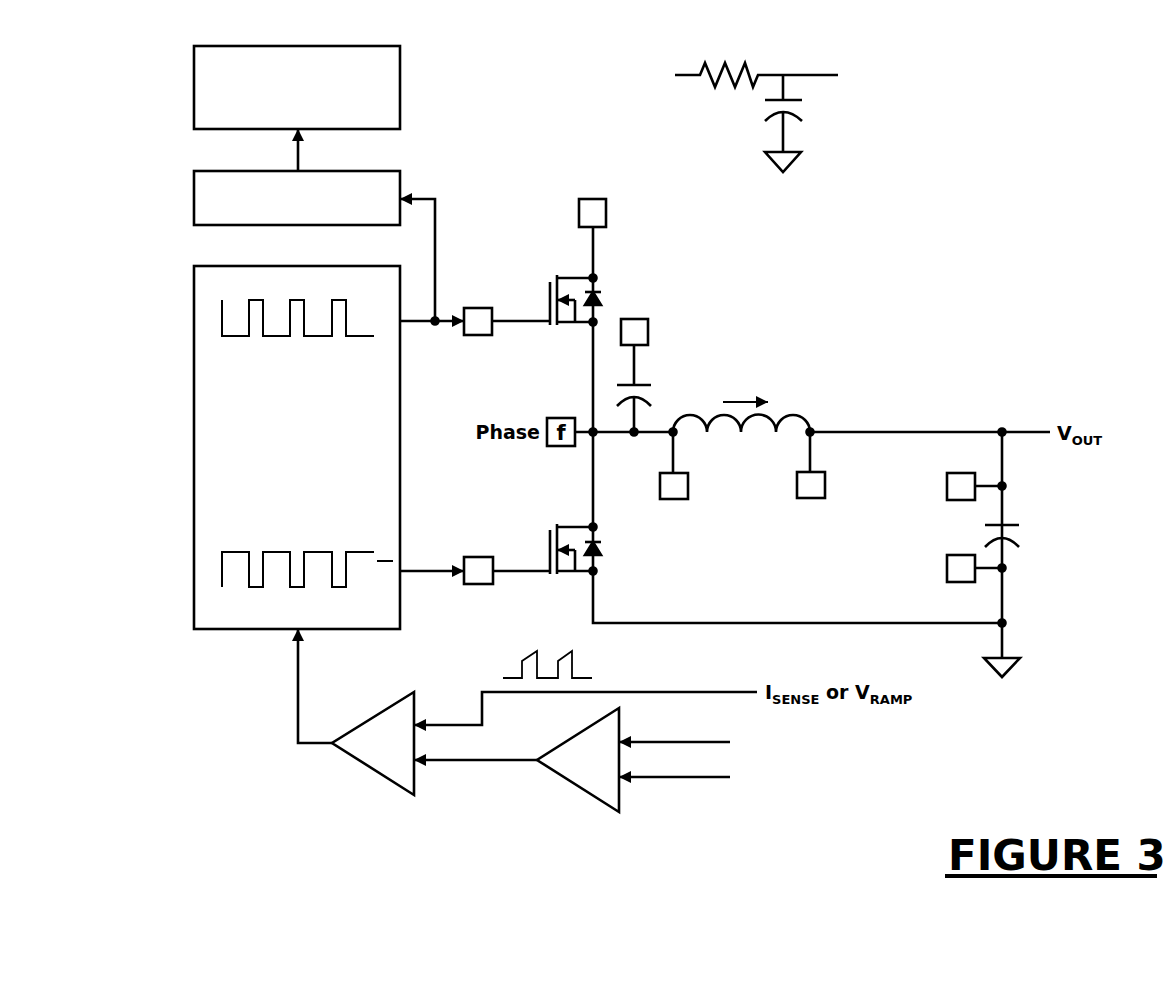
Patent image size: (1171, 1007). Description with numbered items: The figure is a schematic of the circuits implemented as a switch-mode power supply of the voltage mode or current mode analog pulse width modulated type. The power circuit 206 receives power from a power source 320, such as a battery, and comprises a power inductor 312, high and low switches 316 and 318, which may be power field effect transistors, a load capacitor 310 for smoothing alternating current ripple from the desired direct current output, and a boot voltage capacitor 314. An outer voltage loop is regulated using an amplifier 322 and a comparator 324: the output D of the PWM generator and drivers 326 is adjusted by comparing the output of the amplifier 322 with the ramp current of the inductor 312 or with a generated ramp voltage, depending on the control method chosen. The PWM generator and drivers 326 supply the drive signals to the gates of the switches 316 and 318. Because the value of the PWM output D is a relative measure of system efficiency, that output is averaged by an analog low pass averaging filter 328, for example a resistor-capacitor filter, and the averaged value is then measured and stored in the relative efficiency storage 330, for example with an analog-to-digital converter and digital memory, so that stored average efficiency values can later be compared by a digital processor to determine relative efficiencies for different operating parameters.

The power circuit 206 is at (829, 263).
The load capacitor 310 is at (1030, 511).
The power inductor 312 is at (792, 412).
The boot voltage capacitor 314 is at (655, 385).
The high switch 316 is at (550, 303).
The low switch 318 is at (550, 553).
The power source 320 is at (608, 206).
The amplifier 322 is at (581, 786).
The comparator 324 is at (366, 767).
The PWM generator and drivers 326 is at (236, 634).
The averaging filter 328 is at (400, 195).
The relative efficiency storage 330 is at (400, 75).